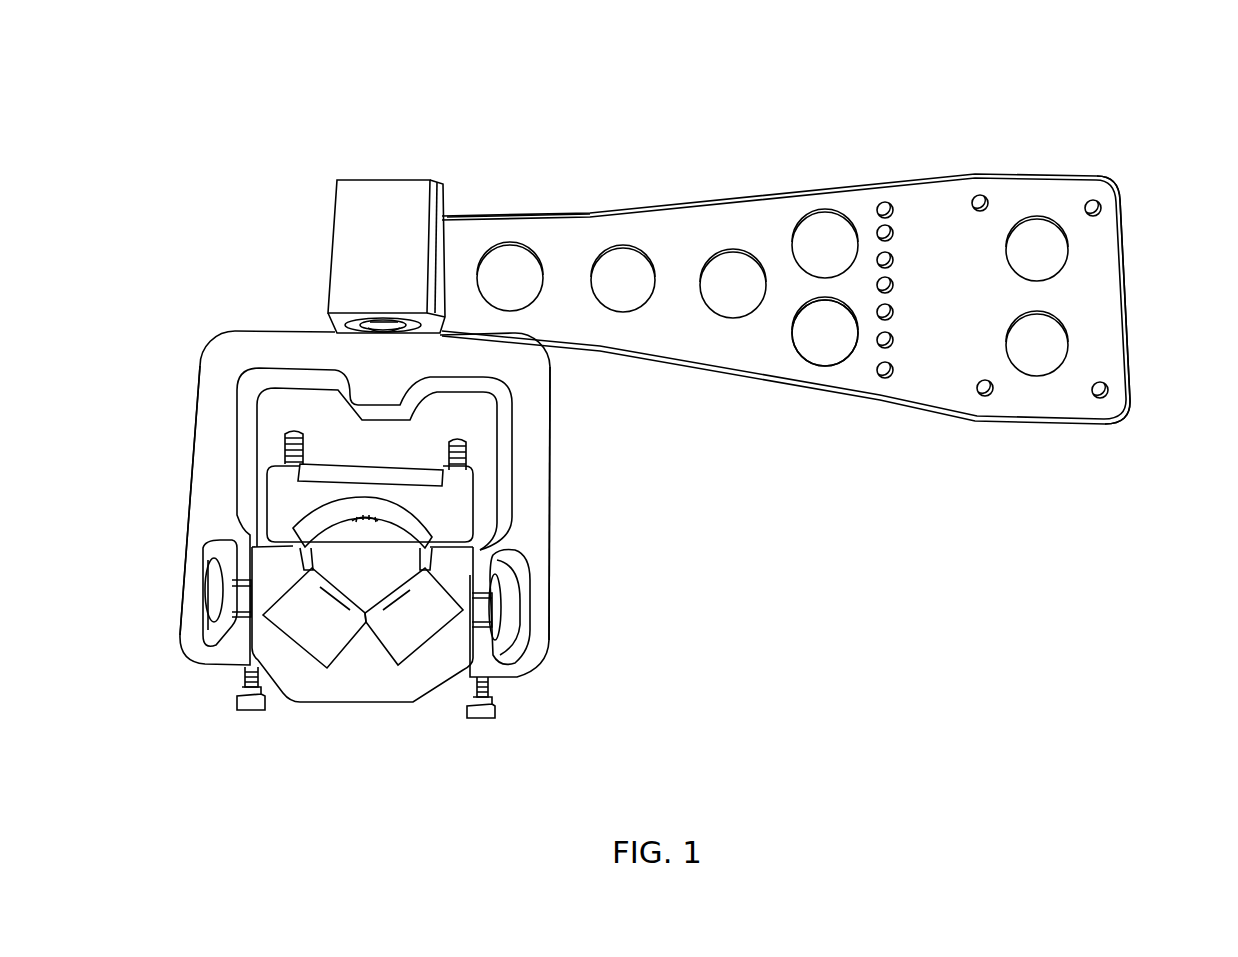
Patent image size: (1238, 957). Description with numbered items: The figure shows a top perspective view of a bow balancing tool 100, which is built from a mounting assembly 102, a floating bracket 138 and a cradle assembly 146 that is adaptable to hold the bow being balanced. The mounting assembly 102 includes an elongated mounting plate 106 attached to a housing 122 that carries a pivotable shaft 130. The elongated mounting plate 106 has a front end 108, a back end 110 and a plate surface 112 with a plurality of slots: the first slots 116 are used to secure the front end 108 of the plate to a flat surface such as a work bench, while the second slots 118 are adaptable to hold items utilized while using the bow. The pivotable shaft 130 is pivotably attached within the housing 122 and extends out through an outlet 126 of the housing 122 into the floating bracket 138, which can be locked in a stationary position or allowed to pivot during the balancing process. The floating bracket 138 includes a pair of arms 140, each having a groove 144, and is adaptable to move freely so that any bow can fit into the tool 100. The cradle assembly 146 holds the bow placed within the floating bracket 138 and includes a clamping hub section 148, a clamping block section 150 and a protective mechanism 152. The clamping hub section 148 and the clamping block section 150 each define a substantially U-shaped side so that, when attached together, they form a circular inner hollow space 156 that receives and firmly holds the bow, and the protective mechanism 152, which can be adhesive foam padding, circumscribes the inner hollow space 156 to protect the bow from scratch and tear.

The bow balancing tool 100 is at (627, 128).
The mounting assembly 102 is at (734, 192).
The elongated mounting plate 106 is at (808, 192).
The front end 108 is at (1132, 262).
The back end 110 is at (484, 214).
The plate surface 112 is at (759, 352).
The first slots 116 is at (978, 194).
The second slots 118 is at (882, 201).
The housing 122 is at (358, 190).
The outlet 126 is at (390, 313).
The pivotable shaft 130 is at (382, 333).
The floating bracket 138 is at (194, 363).
The arms 140 is at (205, 460).
The groove 144 is at (213, 551).
The cradle assembly 146 is at (344, 708).
The clamping hub section 148 is at (398, 690).
The clamping block section 150 is at (463, 493).
The protective mechanism 152 is at (426, 633).
The inner hollow space 156 is at (356, 580).